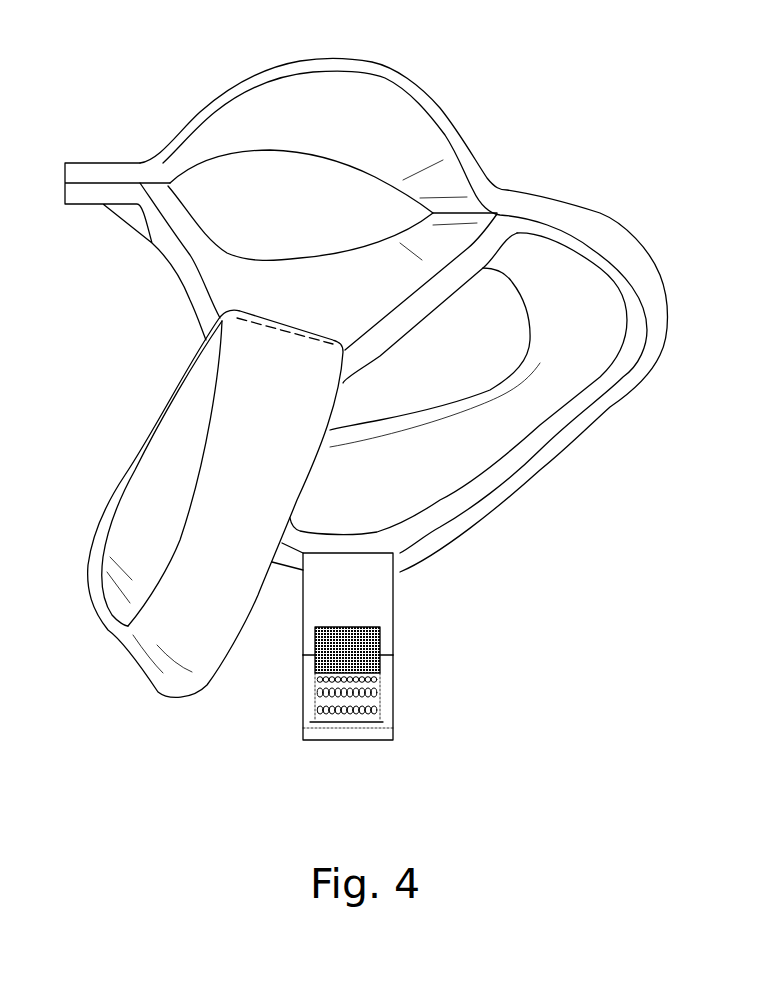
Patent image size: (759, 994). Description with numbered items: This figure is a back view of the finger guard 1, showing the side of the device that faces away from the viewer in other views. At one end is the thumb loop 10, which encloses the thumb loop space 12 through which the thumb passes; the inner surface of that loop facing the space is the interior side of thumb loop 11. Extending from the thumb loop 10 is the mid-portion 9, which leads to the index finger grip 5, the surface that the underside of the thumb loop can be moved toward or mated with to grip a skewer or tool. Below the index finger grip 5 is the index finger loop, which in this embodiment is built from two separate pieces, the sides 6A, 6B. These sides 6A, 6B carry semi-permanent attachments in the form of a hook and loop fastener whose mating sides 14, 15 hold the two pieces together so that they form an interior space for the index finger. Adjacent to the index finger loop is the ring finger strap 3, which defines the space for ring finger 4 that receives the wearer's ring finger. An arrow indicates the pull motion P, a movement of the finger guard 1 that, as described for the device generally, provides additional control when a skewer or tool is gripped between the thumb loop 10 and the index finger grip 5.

The finger guard 1 is at (607, 117).
The ring finger strap 3 is at (152, 667).
The space for ring finger 4 is at (118, 605).
The index finger grip 5 is at (348, 437).
The side of index finger loop 6A is at (305, 702).
The side of index finger loop 6B is at (315, 612).
The mid-portion 9 is at (597, 212).
The thumb loop 10 is at (375, 62).
The interior side of thumb loop 11 is at (334, 304).
The thumb loop space 12 is at (255, 188).
The mating side 14 is at (365, 647).
The mating side 15 is at (363, 710).
The pull motion P is at (63, 570).